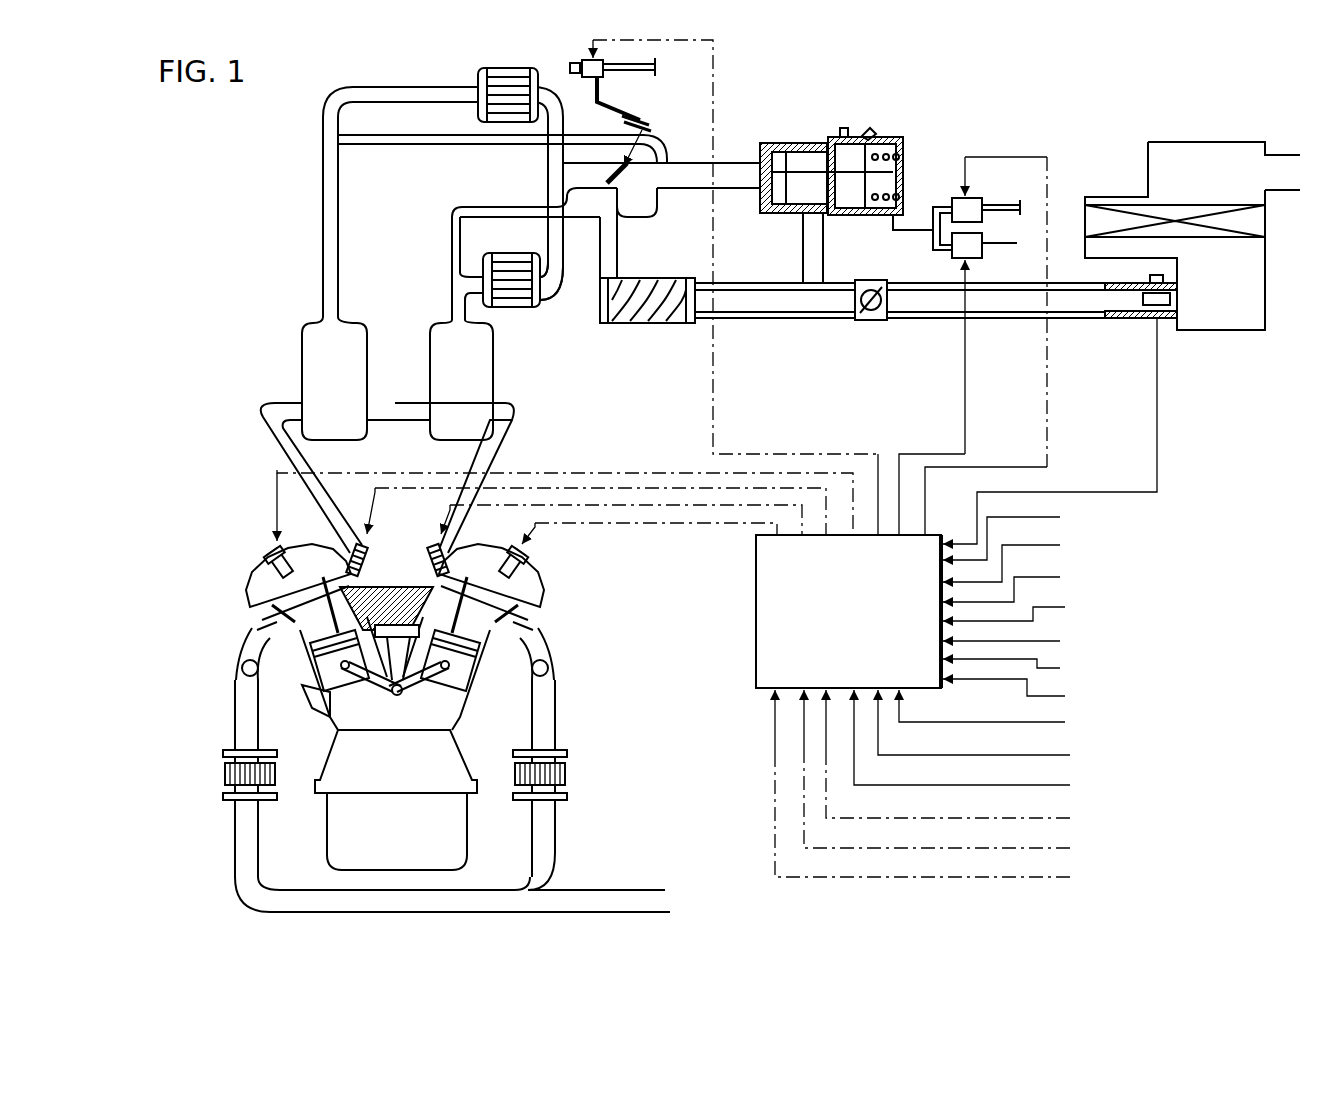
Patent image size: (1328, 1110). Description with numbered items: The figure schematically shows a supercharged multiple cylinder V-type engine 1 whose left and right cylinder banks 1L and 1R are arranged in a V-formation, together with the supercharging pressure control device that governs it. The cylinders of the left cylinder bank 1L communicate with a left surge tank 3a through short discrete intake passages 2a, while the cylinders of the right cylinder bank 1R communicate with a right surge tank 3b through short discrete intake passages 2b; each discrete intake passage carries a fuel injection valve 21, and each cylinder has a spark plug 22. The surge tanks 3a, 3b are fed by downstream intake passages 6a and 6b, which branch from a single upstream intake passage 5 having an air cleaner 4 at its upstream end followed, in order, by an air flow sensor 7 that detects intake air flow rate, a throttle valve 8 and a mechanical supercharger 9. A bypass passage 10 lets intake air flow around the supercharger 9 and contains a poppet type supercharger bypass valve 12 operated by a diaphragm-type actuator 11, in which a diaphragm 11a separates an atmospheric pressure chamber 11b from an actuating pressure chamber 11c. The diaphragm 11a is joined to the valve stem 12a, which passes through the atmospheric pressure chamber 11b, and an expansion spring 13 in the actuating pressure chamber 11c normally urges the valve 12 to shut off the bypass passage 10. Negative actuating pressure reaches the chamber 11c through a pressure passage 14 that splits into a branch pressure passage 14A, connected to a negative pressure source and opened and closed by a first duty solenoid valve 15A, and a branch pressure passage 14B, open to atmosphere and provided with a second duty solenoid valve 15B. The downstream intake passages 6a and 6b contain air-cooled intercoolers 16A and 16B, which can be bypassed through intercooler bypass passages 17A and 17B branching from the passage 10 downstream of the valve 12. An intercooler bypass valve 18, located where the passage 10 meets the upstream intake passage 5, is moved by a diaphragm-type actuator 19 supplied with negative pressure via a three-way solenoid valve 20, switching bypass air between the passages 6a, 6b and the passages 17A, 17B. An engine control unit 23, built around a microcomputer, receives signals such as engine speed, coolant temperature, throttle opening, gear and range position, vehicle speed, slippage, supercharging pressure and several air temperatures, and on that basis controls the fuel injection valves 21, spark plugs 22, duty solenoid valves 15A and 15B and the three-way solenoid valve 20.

The supercharged multiple cylinder V-type engine 1 is at (425, 728).
The right cylinder bank 1R is at (247, 598).
The left cylinder bank 1L is at (536, 618).
The discrete intake passages 2a is at (512, 442).
The discrete intake passages 2b is at (283, 440).
The left surge tank 3a is at (493, 370).
The right surge tank 3b is at (303, 357).
The air cleaner 4 is at (1113, 197).
The upstream intake passage 5 is at (1075, 305).
The downstream intake passage 6a is at (553, 272).
The downstream intake passage 6b is at (330, 238).
The air flow sensor 7 is at (1133, 323).
The throttle valve 8 is at (870, 322).
The mechanical supercharger 9 is at (667, 322).
The bypass passage 10 is at (729, 165).
The diaphragm-type actuator 11 is at (897, 135).
The diaphragm 11a is at (848, 128).
The atmospheric pressure chamber 11b is at (838, 152).
The actuating pressure chamber 11c is at (893, 172).
The supercharger bypass valve 12 is at (772, 148).
The valve stem 12a is at (787, 180).
The expansion spring 13 is at (872, 130).
The pressure passage 14 is at (907, 230).
The branch pressure passage 14A is at (1002, 250).
The branch pressure passage 14B is at (1000, 202).
The first duty solenoid valve 15A is at (958, 258).
The second duty solenoid valve 15B is at (955, 203).
The air-cooled intercooler 16A is at (512, 300).
The air-cooled intercooler 16B is at (503, 78).
The intercooler bypass passage 17A is at (455, 215).
The intercooler bypass passage 17B is at (363, 138).
The intercooler bypass valve 18 is at (620, 192).
The diaphragm-type actuator 19 is at (637, 122).
The three-way solenoid valve 20 is at (590, 56).
The fuel injection valve 21 is at (432, 540).
The spark plug 22 is at (266, 552).
The engine control unit (ECU) 23 is at (756, 650).